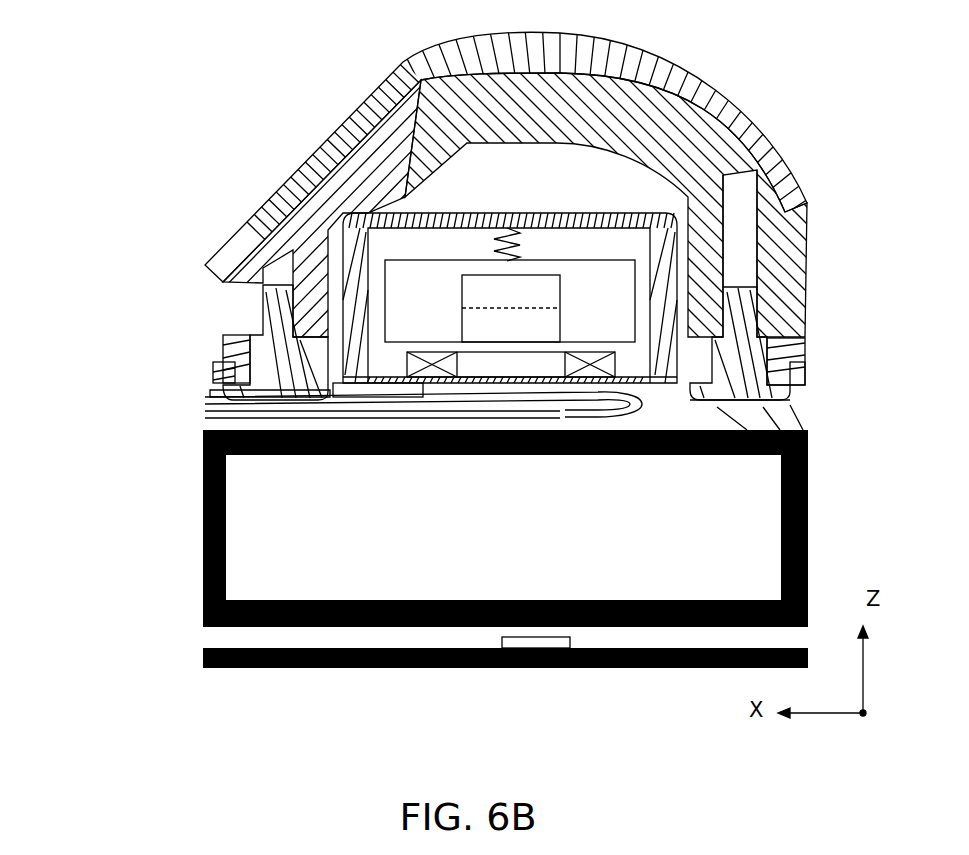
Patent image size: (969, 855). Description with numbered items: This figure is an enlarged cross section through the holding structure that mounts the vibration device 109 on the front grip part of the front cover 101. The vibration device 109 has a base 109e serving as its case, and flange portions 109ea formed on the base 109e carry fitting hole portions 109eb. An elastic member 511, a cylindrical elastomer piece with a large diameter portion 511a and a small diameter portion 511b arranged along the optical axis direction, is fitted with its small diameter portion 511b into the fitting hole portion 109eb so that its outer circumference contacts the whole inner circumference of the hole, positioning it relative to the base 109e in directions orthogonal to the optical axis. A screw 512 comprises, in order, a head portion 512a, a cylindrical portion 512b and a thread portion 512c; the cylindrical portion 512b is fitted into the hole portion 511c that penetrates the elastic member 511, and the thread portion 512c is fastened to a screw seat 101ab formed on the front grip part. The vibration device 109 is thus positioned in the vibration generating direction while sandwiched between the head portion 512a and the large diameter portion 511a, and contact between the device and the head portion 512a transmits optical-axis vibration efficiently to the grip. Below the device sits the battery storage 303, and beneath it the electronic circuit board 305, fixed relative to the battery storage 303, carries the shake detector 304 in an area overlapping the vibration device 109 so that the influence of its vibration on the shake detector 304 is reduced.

The front cover 101 is at (403, 68).
The screw seat 101ab is at (833, 224).
The vibration device 109 is at (363, 193).
The base 109e is at (345, 270).
The flange portion 109ea is at (212, 393).
The fitting hole portion 109eb is at (215, 372).
The elastic member 511 is at (280, 340).
The large diameter portion 511a is at (228, 356).
The small diameter portion 511b is at (140, 348).
The hole portion 511c is at (845, 382).
The screw 512 is at (740, 360).
The head portion 512a is at (790, 408).
The cylindrical portion 512b is at (800, 370).
The thread portion 512c is at (757, 290).
The battery storage 303 is at (204, 527).
The shake detector 304 is at (563, 668).
The electronic circuit board 305 is at (643, 668).